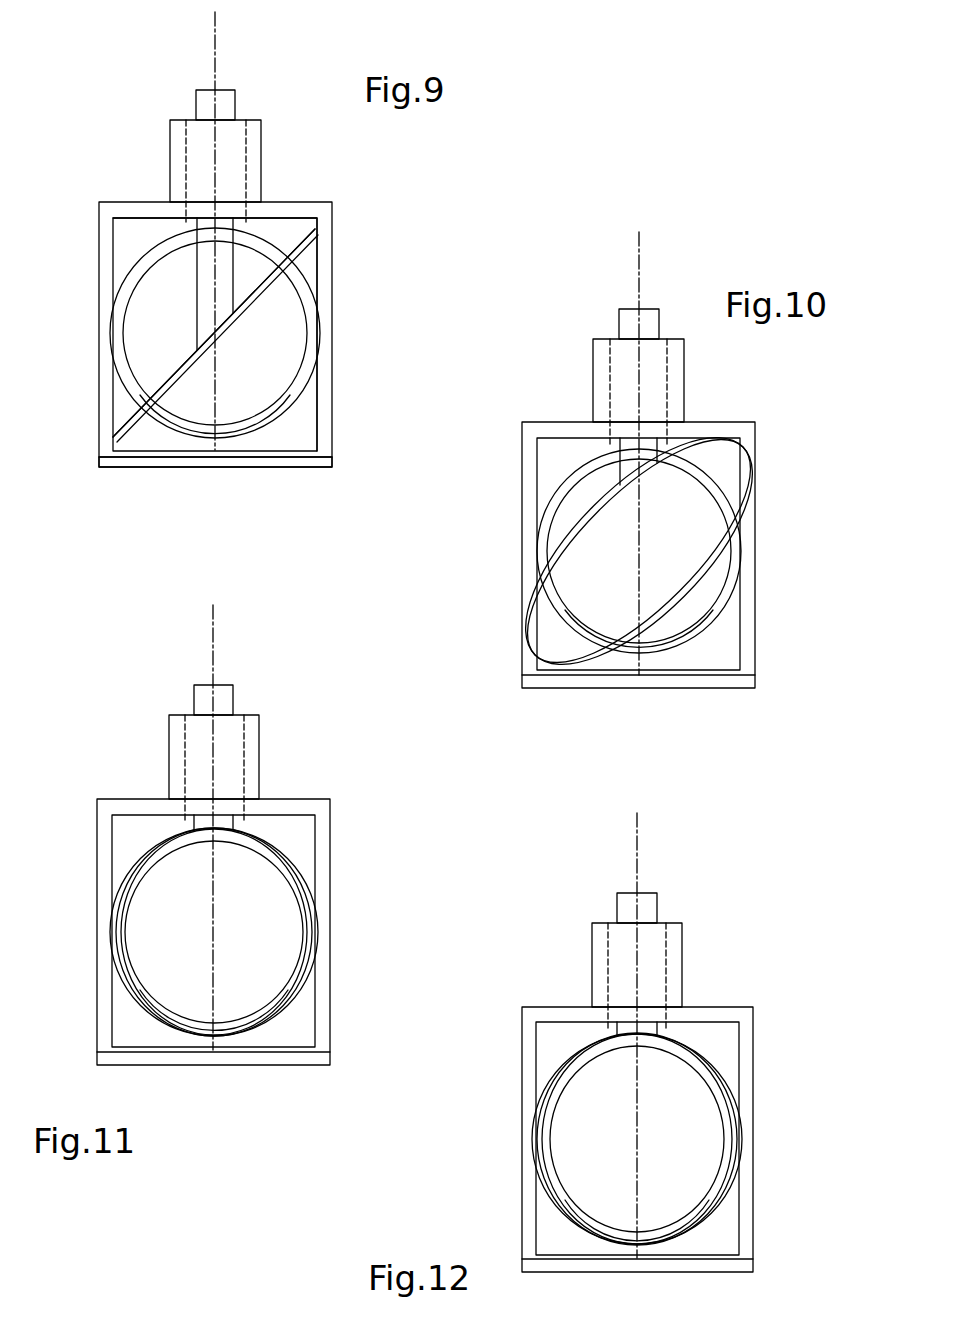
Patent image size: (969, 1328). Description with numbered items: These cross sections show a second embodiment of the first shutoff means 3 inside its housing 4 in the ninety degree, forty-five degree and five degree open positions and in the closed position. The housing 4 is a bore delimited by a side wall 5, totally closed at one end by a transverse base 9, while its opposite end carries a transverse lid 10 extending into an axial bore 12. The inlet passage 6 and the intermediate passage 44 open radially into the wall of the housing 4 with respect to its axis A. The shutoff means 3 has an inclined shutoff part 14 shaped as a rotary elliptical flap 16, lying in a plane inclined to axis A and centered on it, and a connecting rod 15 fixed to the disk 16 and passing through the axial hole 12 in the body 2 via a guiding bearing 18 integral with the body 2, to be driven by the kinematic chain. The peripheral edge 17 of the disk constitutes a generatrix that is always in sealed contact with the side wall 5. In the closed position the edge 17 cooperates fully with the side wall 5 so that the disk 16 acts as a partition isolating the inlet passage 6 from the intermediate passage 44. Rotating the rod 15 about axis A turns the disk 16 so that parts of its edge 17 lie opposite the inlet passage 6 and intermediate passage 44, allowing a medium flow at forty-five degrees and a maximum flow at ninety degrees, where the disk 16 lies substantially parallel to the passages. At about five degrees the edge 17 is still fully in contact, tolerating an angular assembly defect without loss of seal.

In FIG. 9, the body 2 is at (95, 362).
In FIG. 10, the body 2 is at (758, 540).
In FIG. 11, the body 2 is at (93, 932).
In FIG. 12, the body 2 is at (758, 1158).
In FIG. 9, the first shutoff means 3 is at (183, 321).
In FIG. 10, the first shutoff means 3 is at (586, 504).
In FIG. 11, the first shutoff means 3 is at (322, 922).
In FIG. 12, the first shutoff means 3 is at (555, 1214).
In FIG. 9, the housing 4 is at (271, 228).
In FIG. 10, the housing 4 is at (563, 450).
In FIG. 11, the housing 4 is at (293, 833).
In FIG. 12, the housing 4 is at (563, 1037).
In FIG. 9, the side wall 5 is at (307, 265).
In FIG. 10, the side wall 5 is at (740, 645).
In FIG. 11, the side wall 5 is at (113, 838).
In FIG. 12, the side wall 5 is at (737, 1028).
In FIG. 9, the inlet passage 6 is at (215, 465).
In FIG. 10, the inlet passage 6 is at (639, 675).
In FIG. 11, the inlet passage 6 is at (214, 1053).
In FIG. 12, the inlet passage 6 is at (648, 1251).
In FIG. 9, the intermediate passage 44 is at (200, 425).
In FIG. 10, the intermediate passage 44 is at (703, 623).
In FIG. 11, the intermediate passage 44 is at (263, 1002).
In FIG. 12, the intermediate passage 44 is at (710, 1190).
In FIG. 9, the transverse base 9 is at (253, 468).
In FIG. 9, the transverse lid 10 is at (143, 202).
In FIG. 9, the axial bore 12 is at (197, 135).
In FIG. 11, the axial bore 12 is at (214, 768).
In FIG. 12, the axial bore 12 is at (637, 976).
In FIG. 9, the inclined shutoff part 14 is at (232, 335).
In FIG. 9, the connecting rod 15 is at (235, 105).
In FIG. 10, the connecting rod 15 is at (618, 318).
In FIG. 11, the connecting rod 15 is at (234, 697).
In FIG. 12, the connecting rod 15 is at (658, 906).
In FIG. 9, the elliptical flap 16 is at (250, 307).
In FIG. 10, the elliptical flap 16 is at (582, 575).
In FIG. 11, the elliptical flap 16 is at (160, 975).
In FIG. 12, the elliptical flap 16 is at (600, 1203).
In FIG. 9, the peripheral edge 17 is at (112, 433).
In FIG. 10, the peripheral edge 17 is at (573, 537).
In FIG. 11, the peripheral edge 17 is at (313, 965).
In FIG. 12, the peripheral edge 17 is at (563, 1063).
In FIG. 10, the guiding bearing 18 is at (620, 372).
In FIG. 9, the axis A is at (217, 27).
In FIG. 10, the axis A is at (640, 243).
In FIG. 11, the axis A is at (213, 612).
In FIG. 12, the axis A is at (638, 853).